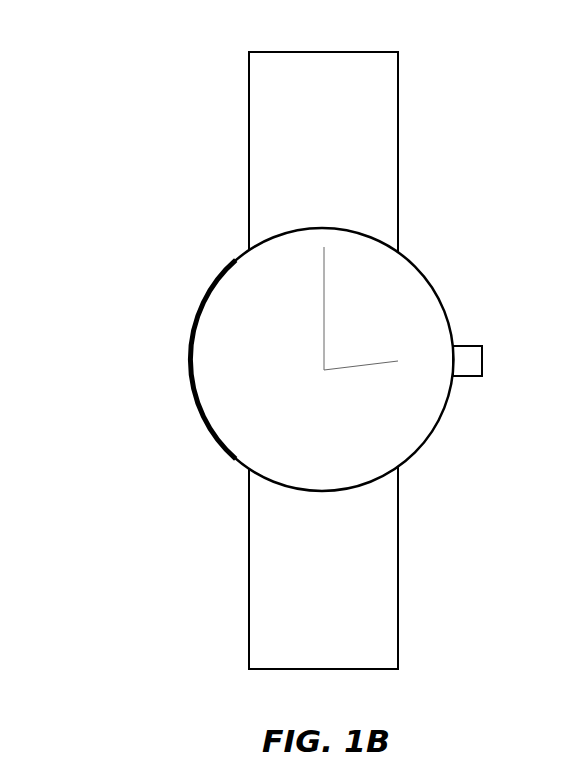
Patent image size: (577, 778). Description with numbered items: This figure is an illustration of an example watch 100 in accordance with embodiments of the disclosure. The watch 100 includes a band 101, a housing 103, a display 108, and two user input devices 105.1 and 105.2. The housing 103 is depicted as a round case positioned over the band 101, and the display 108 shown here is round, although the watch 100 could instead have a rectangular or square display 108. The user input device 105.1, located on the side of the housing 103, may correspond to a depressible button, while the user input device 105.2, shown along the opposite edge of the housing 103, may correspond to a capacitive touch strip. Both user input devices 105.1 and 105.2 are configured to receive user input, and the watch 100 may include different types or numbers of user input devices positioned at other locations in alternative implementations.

The watch 100 is at (323, 333).
The band 101 is at (249, 65).
The housing 103 is at (425, 445).
The user input device 105.1 is at (472, 346).
The user input device 105.2 is at (212, 290).
The display 108 is at (417, 302).